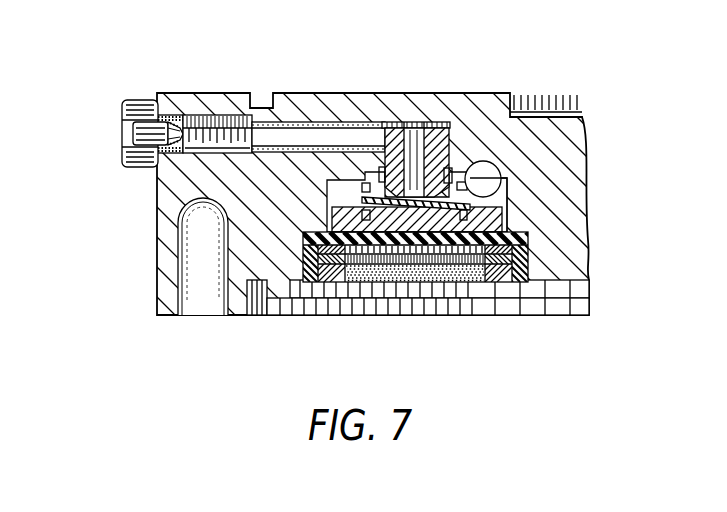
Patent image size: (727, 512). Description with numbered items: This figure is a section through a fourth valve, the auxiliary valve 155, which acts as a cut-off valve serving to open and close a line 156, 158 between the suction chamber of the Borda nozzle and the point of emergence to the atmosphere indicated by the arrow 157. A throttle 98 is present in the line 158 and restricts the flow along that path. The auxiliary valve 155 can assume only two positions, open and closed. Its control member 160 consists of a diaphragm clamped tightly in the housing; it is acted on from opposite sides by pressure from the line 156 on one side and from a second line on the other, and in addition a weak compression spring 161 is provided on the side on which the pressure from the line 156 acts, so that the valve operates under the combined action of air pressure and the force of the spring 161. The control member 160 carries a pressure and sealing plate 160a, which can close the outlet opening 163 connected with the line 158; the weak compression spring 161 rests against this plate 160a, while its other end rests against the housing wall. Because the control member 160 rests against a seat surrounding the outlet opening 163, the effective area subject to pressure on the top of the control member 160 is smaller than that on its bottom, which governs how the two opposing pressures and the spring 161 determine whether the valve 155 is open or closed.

The throttle 98 is at (172, 118).
The auxiliary valve 155 is at (512, 213).
The line 156 is at (495, 177).
The point of emergence to the atmosphere 157 is at (124, 158).
The line 158 is at (324, 137).
The control member 160 is at (398, 228).
The pressure and sealing plate 160a is at (442, 213).
The compression spring 161 is at (484, 162).
The outlet opening 163 is at (417, 133).